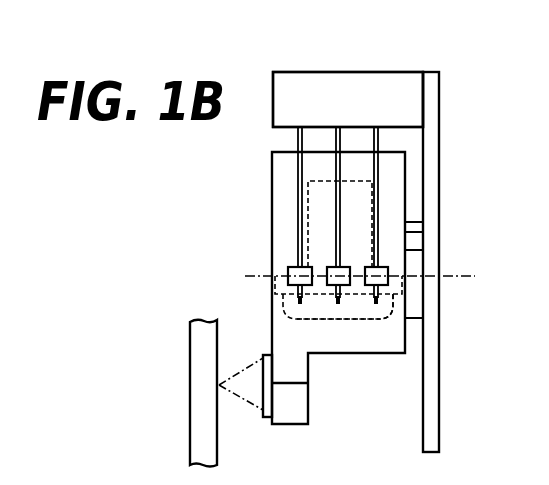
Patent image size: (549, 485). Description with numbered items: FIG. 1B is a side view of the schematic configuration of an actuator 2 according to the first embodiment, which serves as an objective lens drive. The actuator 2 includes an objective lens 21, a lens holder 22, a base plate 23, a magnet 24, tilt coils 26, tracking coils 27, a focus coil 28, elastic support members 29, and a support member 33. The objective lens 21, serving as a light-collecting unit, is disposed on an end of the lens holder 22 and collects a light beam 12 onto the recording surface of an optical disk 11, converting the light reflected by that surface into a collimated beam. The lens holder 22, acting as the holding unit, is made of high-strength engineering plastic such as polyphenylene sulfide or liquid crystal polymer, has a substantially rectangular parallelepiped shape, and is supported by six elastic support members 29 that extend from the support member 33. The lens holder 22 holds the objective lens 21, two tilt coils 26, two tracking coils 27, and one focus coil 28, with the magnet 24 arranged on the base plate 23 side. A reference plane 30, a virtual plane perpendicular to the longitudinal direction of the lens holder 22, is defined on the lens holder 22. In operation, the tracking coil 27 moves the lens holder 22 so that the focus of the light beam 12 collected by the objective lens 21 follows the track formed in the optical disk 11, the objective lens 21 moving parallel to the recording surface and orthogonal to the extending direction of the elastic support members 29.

The actuator 2 is at (400, 53).
The optical disk 11 is at (197, 347).
The light beam 12 is at (246, 372).
The objective lens 21 is at (268, 405).
The lens holder 22 is at (365, 345).
The base plate 23 is at (432, 413).
The magnet 24 is at (343, 313).
The tilt coil 26 is at (338, 308).
The tracking coil 27 is at (388, 321).
The focus coil 28 is at (310, 192).
The elastic support member 29 is at (377, 142).
The reference plane 30 is at (460, 275).
The support member 33 is at (293, 82).